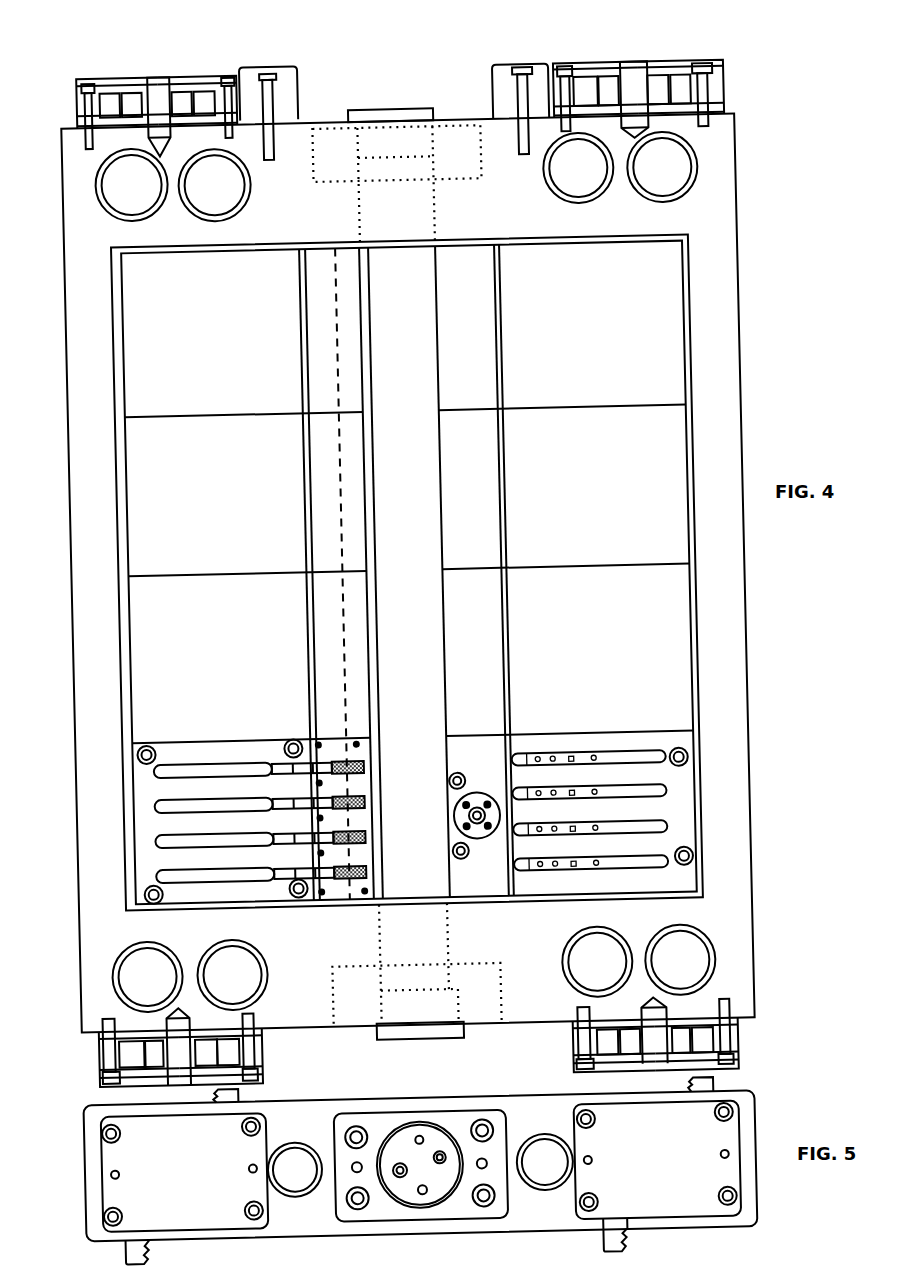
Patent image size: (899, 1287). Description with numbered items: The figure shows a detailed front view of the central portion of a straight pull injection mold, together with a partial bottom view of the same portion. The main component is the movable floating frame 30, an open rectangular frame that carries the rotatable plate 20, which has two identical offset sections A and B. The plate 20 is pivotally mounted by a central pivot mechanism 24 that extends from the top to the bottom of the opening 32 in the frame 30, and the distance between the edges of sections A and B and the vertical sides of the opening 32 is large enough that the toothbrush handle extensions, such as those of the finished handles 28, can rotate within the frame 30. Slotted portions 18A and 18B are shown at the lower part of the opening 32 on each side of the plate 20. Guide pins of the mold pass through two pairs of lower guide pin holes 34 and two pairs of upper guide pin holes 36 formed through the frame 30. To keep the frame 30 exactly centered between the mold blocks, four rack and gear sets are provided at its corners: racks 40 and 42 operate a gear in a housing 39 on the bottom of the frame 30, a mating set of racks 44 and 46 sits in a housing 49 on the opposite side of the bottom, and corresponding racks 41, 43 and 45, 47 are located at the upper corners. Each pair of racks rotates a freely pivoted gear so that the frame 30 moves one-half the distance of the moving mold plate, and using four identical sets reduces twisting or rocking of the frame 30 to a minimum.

In FIG. 4, the slotted adjustment plate A 18A is at (197, 746).
In FIG. 4, the slotted adjustment plate B 18B is at (543, 740).
In FIG. 4, the rotatable plate 20 is at (310, 338).
In FIG. 4, the central pivot mechanism 24 is at (402, 106).
In FIG. 5, the central pivot mechanism 24 is at (418, 1138).
In FIG. 4, the finished handles 28 is at (612, 758).
In FIG. 4, the movable frame 30 is at (715, 216).
In FIG. 5, the movable frame 30 is at (300, 1097).
In FIG. 4, the opening 32 is at (687, 330).
In FIG. 4, the lower guide pin holes 34 is at (160, 940).
In FIG. 4, the upper guide pin holes 36 is at (150, 211).
In FIG. 5, the housing 39 is at (152, 1184).
In FIG. 4, the rack 40 is at (120, 1048).
In FIG. 5, the rack 40 is at (137, 1246).
In FIG. 4, the rack 41 is at (133, 88).
In FIG. 4, the rack 42 is at (226, 1040).
In FIG. 5, the rack 42 is at (228, 1090).
In FIG. 4, the rack 43 is at (227, 90).
In FIG. 4, the rack 44 is at (597, 1042).
In FIG. 5, the rack 44 is at (614, 1246).
In FIG. 4, the rack 45 is at (598, 98).
In FIG. 4, the rack 46 is at (690, 1040).
In FIG. 5, the rack 46 is at (703, 1090).
In FIG. 4, the rack 47 is at (677, 100).
In FIG. 5, the housing 49 is at (640, 1174).